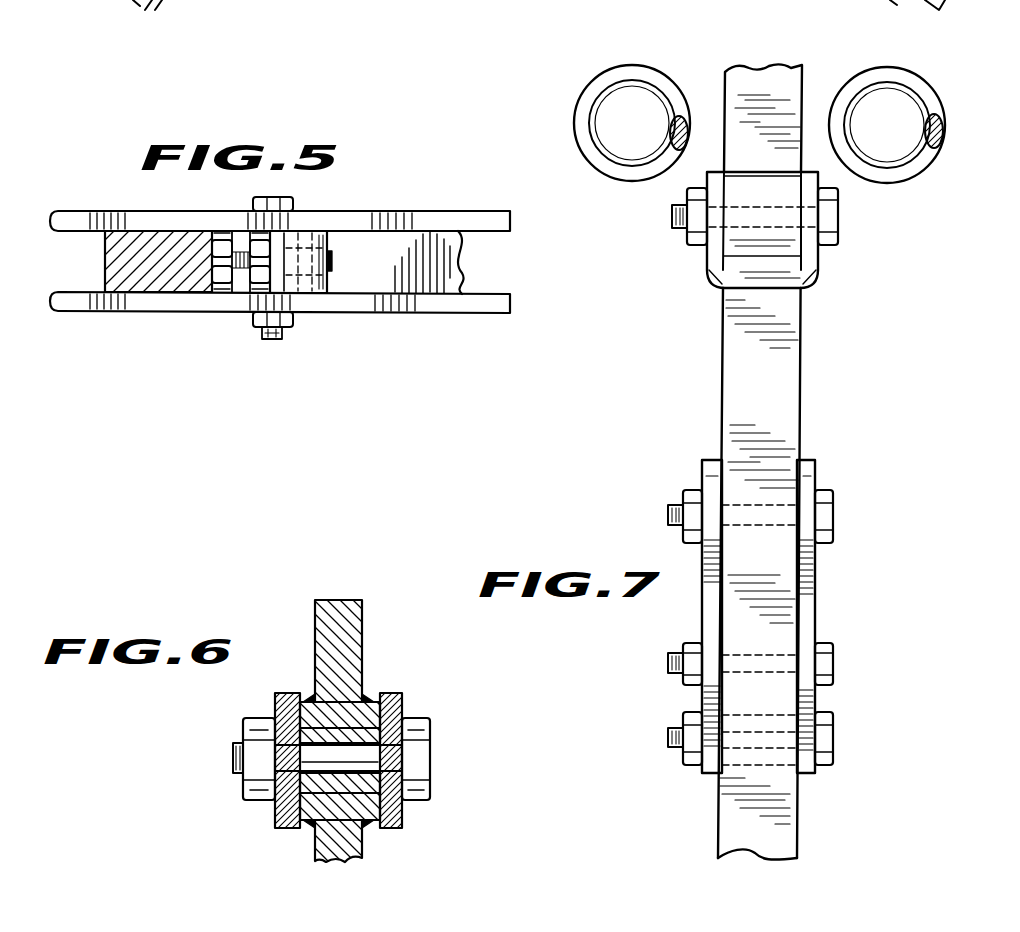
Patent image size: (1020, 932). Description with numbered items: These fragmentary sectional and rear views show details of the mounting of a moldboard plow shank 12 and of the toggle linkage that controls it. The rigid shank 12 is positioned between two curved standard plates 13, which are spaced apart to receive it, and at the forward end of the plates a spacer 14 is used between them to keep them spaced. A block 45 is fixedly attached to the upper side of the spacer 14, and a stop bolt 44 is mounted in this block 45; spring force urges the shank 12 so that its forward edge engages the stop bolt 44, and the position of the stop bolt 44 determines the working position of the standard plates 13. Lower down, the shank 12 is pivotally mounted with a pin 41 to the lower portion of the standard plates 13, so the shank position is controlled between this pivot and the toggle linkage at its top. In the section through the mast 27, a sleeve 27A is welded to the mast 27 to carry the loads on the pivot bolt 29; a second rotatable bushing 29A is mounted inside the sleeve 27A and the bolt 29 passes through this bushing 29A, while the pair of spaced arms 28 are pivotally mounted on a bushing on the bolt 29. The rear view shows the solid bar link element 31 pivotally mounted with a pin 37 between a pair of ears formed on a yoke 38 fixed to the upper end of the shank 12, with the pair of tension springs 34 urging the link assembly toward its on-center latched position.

In FIG. 5, the shank 12 is at (152, 277).
In FIG. 7, the shank 12 is at (777, 798).
In FIG. 5, the standard plates 13 is at (381, 212).
In FIG. 7, the standard plates 13 is at (702, 620).
In FIG. 5, the spacer 14 is at (429, 276).
In FIG. 5, the stop bolt 44 is at (227, 277).
In FIG. 5, the block 45 is at (303, 280).
In FIG. 6, the mast 27 is at (355, 610).
In FIG. 6, the sleeve 27A is at (343, 710).
In FIG. 6, the arms 28 is at (277, 703).
In FIG. 6, the pivot bolt 29 is at (430, 790).
In FIG. 6, the rotatable bushing 29A is at (283, 808).
In FIG. 7, the second toggle link element 31 is at (725, 90).
In FIG. 7, the tension springs 34 is at (645, 67).
In FIG. 7, the pin 37 is at (840, 240).
In FIG. 7, the yoke 38 is at (715, 272).
In FIG. 7, the pin 41 is at (833, 728).